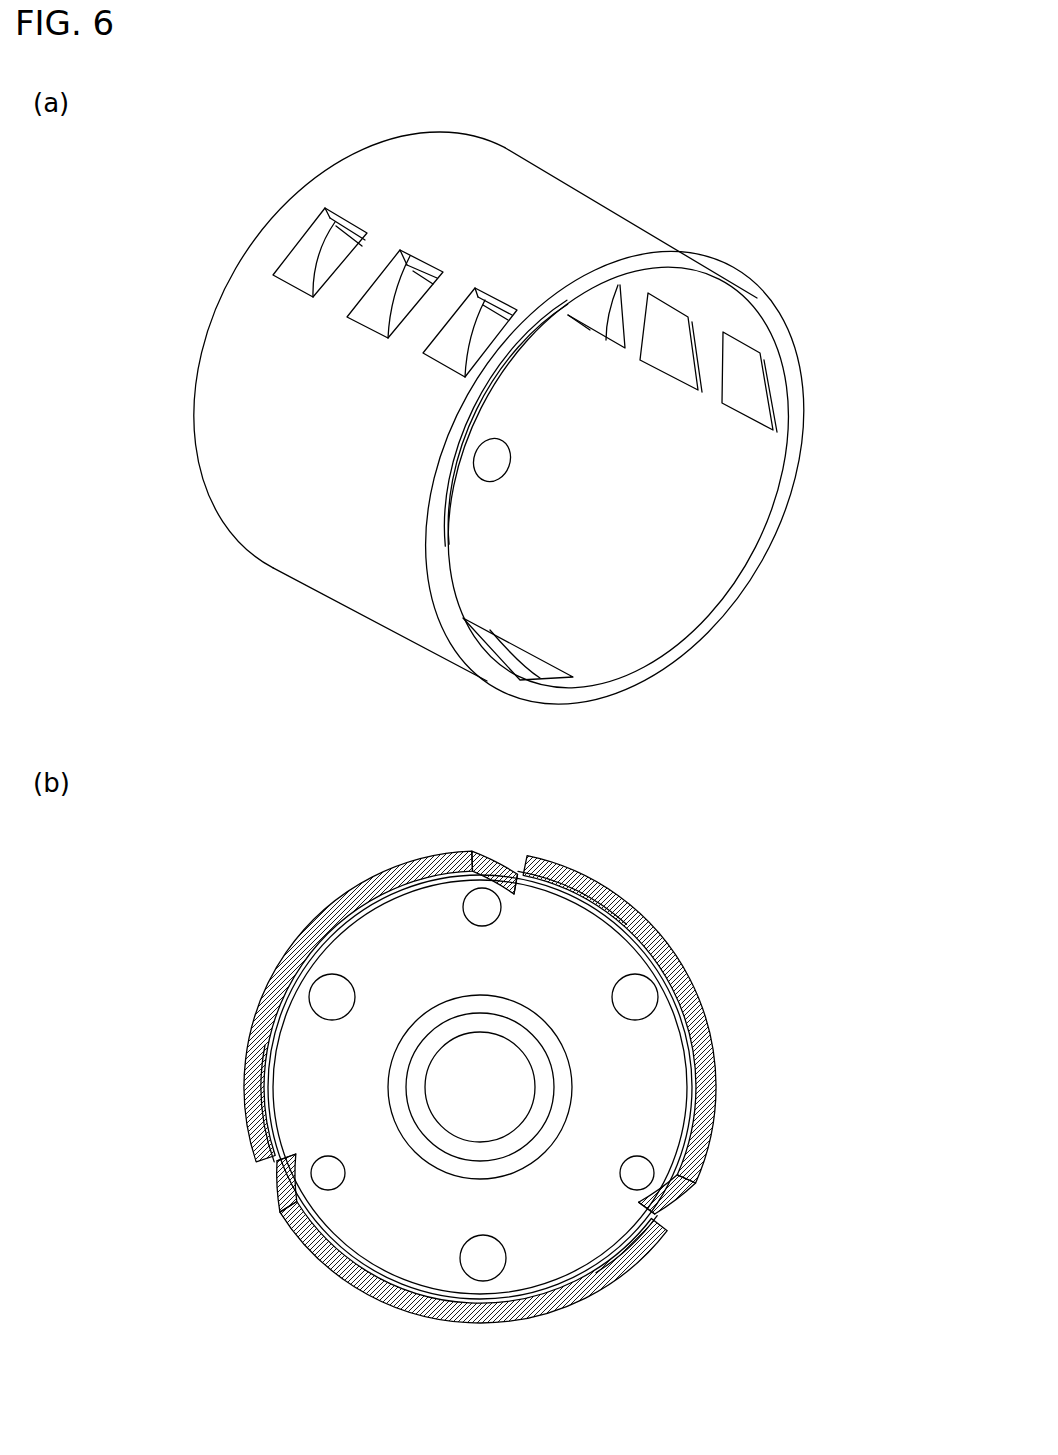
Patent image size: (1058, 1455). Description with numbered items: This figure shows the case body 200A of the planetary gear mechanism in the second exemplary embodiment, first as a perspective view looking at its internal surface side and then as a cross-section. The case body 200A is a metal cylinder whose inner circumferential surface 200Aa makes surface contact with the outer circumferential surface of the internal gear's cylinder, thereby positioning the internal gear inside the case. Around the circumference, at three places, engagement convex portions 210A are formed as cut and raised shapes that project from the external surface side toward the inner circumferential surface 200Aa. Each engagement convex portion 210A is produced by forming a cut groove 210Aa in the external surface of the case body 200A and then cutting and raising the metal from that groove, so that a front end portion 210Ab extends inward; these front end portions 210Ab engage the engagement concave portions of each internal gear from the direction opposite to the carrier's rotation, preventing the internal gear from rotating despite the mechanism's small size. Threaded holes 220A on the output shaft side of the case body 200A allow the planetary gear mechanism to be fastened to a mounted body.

The case body 200A is at (607, 243).
The inner circumferential surface 200Aa is at (644, 490).
The engagement convex portion 210A is at (317, 258).
The cut groove 210Aa is at (417, 267).
The front end portion 210Ab is at (615, 925).
The threaded hole 220A is at (329, 994).